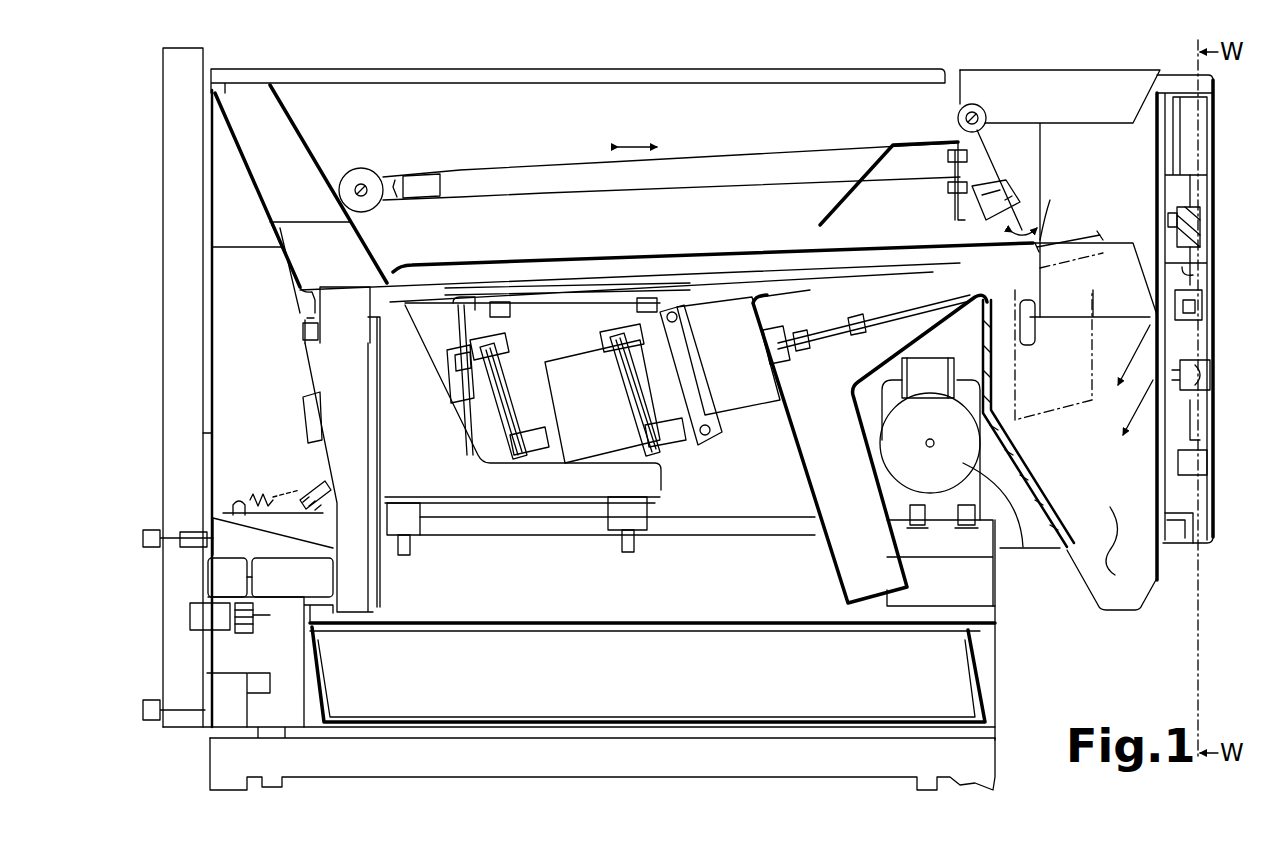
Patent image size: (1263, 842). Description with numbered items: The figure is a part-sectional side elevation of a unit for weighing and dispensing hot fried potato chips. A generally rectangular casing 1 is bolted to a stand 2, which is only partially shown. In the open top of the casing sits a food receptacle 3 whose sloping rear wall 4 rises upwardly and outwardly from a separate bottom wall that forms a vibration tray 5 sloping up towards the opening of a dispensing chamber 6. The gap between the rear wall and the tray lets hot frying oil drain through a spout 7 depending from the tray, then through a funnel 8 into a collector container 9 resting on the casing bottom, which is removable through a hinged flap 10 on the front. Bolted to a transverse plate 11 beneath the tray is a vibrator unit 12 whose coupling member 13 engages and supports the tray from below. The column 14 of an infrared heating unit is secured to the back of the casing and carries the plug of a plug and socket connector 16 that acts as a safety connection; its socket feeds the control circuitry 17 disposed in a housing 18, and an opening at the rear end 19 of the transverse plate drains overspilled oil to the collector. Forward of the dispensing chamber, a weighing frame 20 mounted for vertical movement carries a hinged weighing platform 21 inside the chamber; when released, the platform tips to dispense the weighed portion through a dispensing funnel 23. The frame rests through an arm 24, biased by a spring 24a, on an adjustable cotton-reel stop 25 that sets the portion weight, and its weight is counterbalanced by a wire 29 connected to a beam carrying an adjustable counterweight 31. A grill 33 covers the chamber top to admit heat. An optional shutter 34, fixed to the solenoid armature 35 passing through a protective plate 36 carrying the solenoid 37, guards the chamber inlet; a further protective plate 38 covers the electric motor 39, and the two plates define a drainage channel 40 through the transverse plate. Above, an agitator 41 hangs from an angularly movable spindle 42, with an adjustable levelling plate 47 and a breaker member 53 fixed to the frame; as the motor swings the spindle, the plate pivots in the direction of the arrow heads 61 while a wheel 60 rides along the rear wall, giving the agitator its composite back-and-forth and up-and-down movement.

The casing 1 is at (207, 435).
The stand 2 is at (985, 757).
The food receptacle 3 is at (335, 105).
The sloping rear wall 4 is at (316, 163).
The vibration tray 5 is at (512, 280).
The dispensing chamber 6 is at (1121, 327).
The spout 7 is at (303, 331).
The funnel 8 is at (335, 443).
The collector container 9 is at (652, 672).
The hinged flap 10 is at (998, 682).
The transverse plate 11 is at (530, 540).
The vibrator unit 12 is at (533, 396).
The coupling member 13 is at (560, 297).
The column 14 is at (185, 357).
The plug and socket connector 16 is at (190, 637).
The control circuitry 17 is at (283, 625).
The housing 18 is at (277, 525).
The rear end of transverse plate 19 is at (385, 578).
The weighing frame 20 is at (1202, 312).
The weighing platform 21 is at (1124, 320).
The dispensing funnel 23 is at (1140, 603).
The arm 24 is at (1212, 372).
The spring 24a is at (1125, 393).
The stop 25 is at (1208, 420).
The wire 29 is at (1200, 258).
The counterweight 31 is at (1205, 207).
The grill 33 is at (1128, 125).
The shutter 34 is at (953, 250).
The solenoid armature 35 is at (843, 338).
The protective plate 36 is at (795, 448).
The solenoid 37 is at (815, 370).
The further protective plate 38 is at (932, 340).
The electric motor 39 is at (965, 465).
The channel 40 is at (916, 551).
The agitator 41 is at (530, 165).
The spindle 42 is at (977, 108).
The levelling plate 47 is at (1020, 235).
The breaker member 53 is at (850, 203).
The wheel 60 is at (380, 170).
The arrow heads 61 is at (1042, 242).